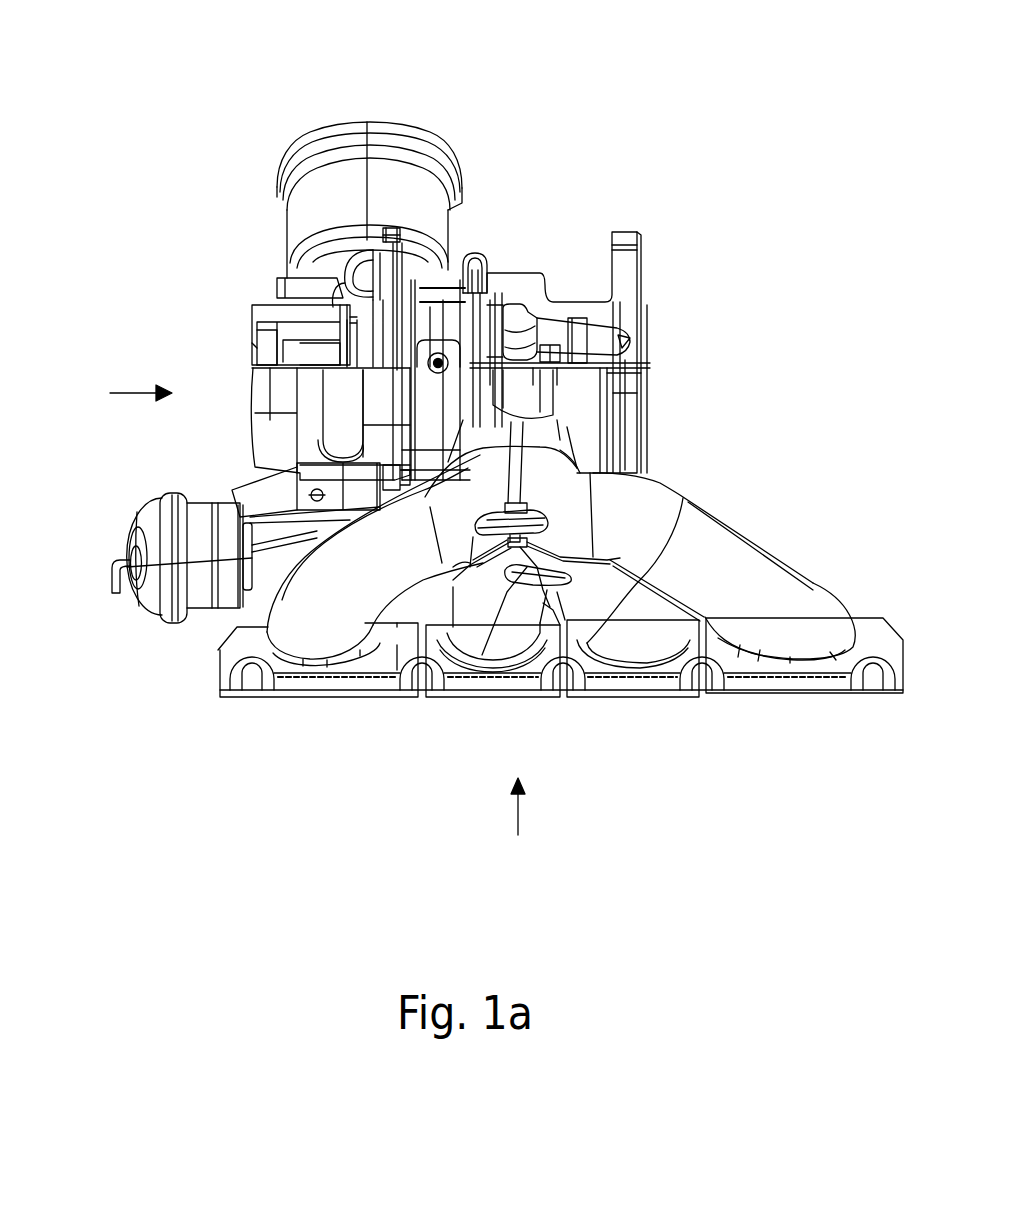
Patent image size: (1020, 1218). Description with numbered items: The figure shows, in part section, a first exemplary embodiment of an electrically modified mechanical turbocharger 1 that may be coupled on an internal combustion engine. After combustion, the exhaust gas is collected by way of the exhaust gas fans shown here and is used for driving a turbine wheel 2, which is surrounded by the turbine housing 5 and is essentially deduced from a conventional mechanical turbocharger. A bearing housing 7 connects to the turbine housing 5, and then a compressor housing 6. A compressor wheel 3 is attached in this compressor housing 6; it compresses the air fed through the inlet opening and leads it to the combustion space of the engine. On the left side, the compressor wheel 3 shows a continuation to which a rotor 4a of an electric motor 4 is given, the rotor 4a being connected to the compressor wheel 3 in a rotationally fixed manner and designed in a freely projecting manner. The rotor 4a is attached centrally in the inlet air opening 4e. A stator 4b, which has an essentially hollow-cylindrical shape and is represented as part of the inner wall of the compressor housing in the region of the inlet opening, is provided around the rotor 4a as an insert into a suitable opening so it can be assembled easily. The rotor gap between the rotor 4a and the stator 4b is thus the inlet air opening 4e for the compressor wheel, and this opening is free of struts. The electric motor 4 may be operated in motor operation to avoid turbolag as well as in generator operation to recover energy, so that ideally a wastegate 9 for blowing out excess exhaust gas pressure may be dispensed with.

The turbocharger 1 is at (228, 825).
The turbine wheel 2 is at (527, 331).
The compressor wheel 3 is at (412, 244).
The electric motor 4 is at (218, 314).
The rotor 4a is at (327, 352).
The stator 4b is at (288, 318).
The inlet air opening 4e is at (262, 347).
The turbine housing 5 is at (649, 510).
The compressor housing 6 is at (300, 398).
The bearing housing 7 is at (487, 262).
The wastegate 9 is at (160, 595).